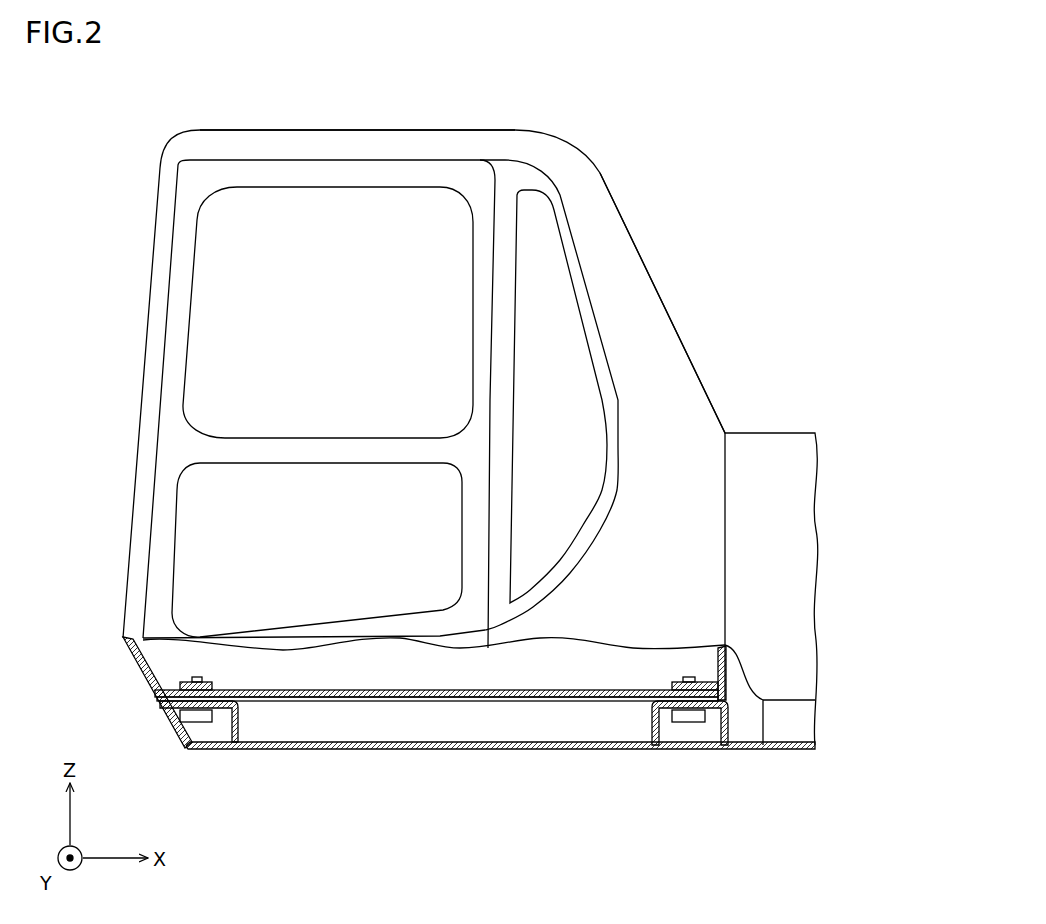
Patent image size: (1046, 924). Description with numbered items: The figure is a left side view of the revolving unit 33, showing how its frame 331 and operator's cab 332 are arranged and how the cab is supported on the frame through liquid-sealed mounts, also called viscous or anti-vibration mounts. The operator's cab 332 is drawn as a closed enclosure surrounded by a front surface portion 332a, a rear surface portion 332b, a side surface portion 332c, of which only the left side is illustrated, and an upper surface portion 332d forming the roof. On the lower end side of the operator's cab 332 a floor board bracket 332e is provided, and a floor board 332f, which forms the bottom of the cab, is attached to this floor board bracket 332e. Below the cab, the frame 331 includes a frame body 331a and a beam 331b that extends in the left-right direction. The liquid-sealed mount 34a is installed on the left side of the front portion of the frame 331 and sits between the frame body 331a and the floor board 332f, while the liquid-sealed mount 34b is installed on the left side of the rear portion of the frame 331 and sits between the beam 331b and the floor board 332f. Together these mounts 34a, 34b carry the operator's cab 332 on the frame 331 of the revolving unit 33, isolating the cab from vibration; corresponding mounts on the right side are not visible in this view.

The revolving unit 33 is at (137, 120).
The operator's cab 332 is at (444, 175).
The upper surface portion 332d is at (345, 130).
The side surface portion 332c is at (633, 258).
The floor board bracket 332e is at (180, 683).
The floor board 332f is at (440, 697).
The rear surface portion 332b is at (707, 686).
The front surface portion 332a is at (148, 690).
The frame 331 is at (527, 750).
The frame body 331a is at (238, 720).
The beam 331b is at (650, 722).
The liquid-sealed mount 34a is at (200, 722).
The liquid-sealed mount 34b is at (690, 722).